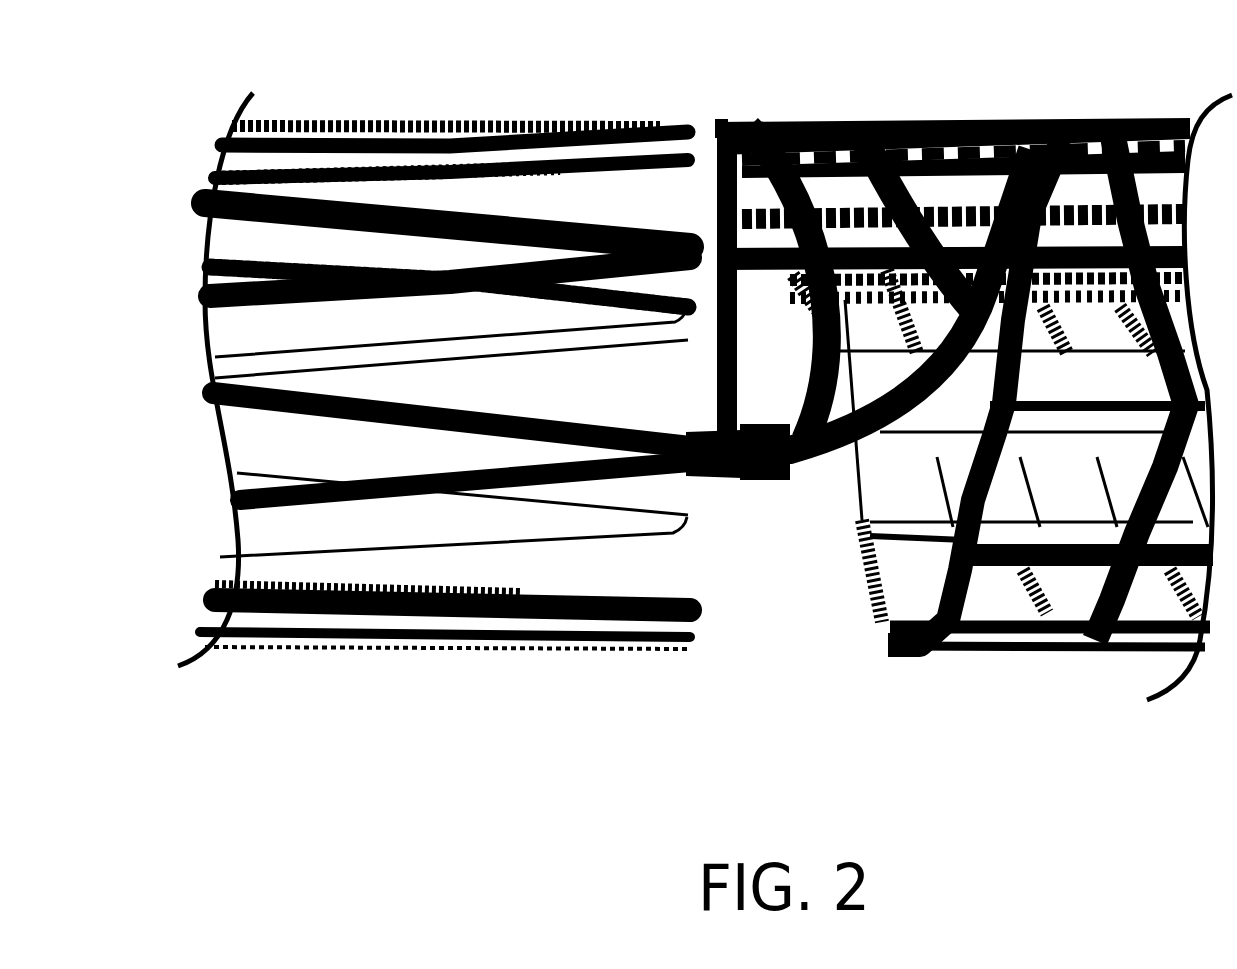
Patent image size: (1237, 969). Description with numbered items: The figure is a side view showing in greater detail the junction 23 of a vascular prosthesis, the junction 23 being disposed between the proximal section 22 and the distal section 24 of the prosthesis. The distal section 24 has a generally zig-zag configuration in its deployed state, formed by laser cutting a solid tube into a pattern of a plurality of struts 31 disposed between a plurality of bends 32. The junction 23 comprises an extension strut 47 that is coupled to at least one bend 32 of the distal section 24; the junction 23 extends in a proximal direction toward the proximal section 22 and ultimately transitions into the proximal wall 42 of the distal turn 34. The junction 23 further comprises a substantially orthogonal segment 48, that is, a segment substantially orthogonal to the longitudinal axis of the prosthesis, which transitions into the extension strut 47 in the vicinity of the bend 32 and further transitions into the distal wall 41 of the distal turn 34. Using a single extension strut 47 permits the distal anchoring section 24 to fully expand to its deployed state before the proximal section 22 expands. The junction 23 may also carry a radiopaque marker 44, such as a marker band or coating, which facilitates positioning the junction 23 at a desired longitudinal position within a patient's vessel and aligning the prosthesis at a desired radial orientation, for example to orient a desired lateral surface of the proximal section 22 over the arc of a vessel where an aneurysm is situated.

The proximal section 22 is at (1080, 678).
The junction 23 is at (797, 628).
The distal section 24 is at (477, 670).
The struts 31 is at (462, 350).
The bends 32 is at (688, 338).
The distal turn 34 is at (918, 125).
The distal wall 41 is at (810, 198).
The proximal wall 42 is at (1045, 125).
The radiopaque marker 44 is at (773, 480).
The extension strut 47 is at (722, 479).
The substantially orthogonal segment 48 is at (717, 215).